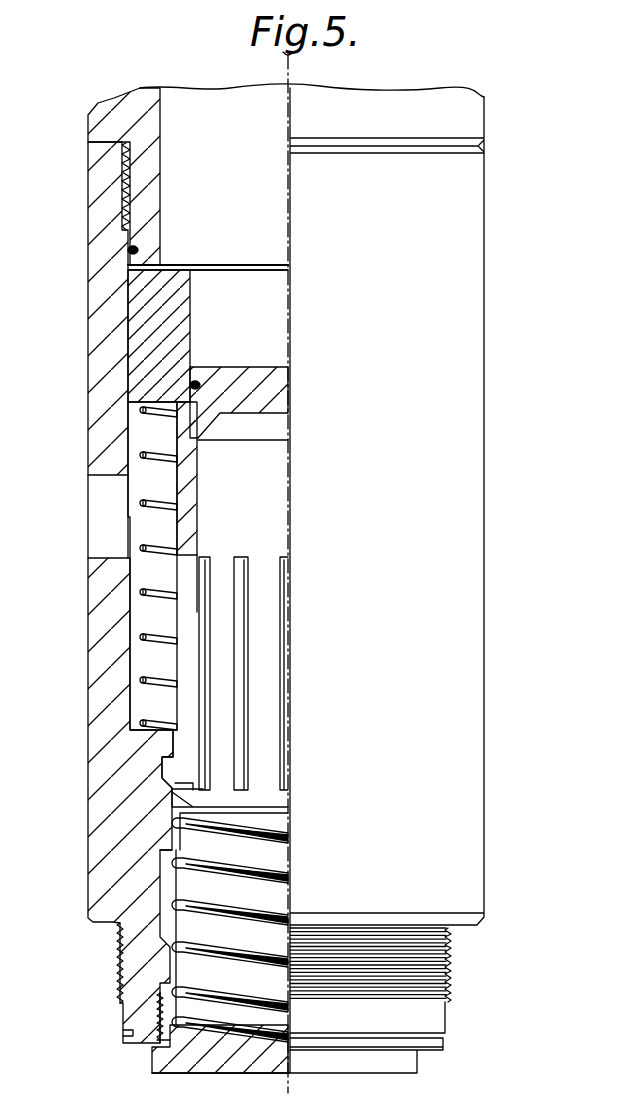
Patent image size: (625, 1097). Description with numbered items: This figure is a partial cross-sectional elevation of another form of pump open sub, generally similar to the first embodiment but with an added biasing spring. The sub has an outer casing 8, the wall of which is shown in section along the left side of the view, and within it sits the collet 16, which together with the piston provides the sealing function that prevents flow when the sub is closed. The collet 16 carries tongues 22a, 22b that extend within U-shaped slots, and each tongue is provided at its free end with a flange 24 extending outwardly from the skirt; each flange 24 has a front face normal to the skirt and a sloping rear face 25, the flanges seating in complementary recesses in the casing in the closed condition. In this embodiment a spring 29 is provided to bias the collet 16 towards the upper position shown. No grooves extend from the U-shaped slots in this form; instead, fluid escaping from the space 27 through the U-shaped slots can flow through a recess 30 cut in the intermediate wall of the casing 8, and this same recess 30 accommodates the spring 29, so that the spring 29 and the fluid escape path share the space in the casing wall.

The outer casing 8 is at (105, 425).
The collet 16 is at (147, 340).
The tongue 22a is at (253, 647).
The tongue 22b is at (198, 614).
The flange 24 is at (163, 757).
The seal ring 25 is at (162, 787).
The space 27 is at (190, 885).
The spring 29 is at (132, 593).
The recess 30 is at (130, 697).